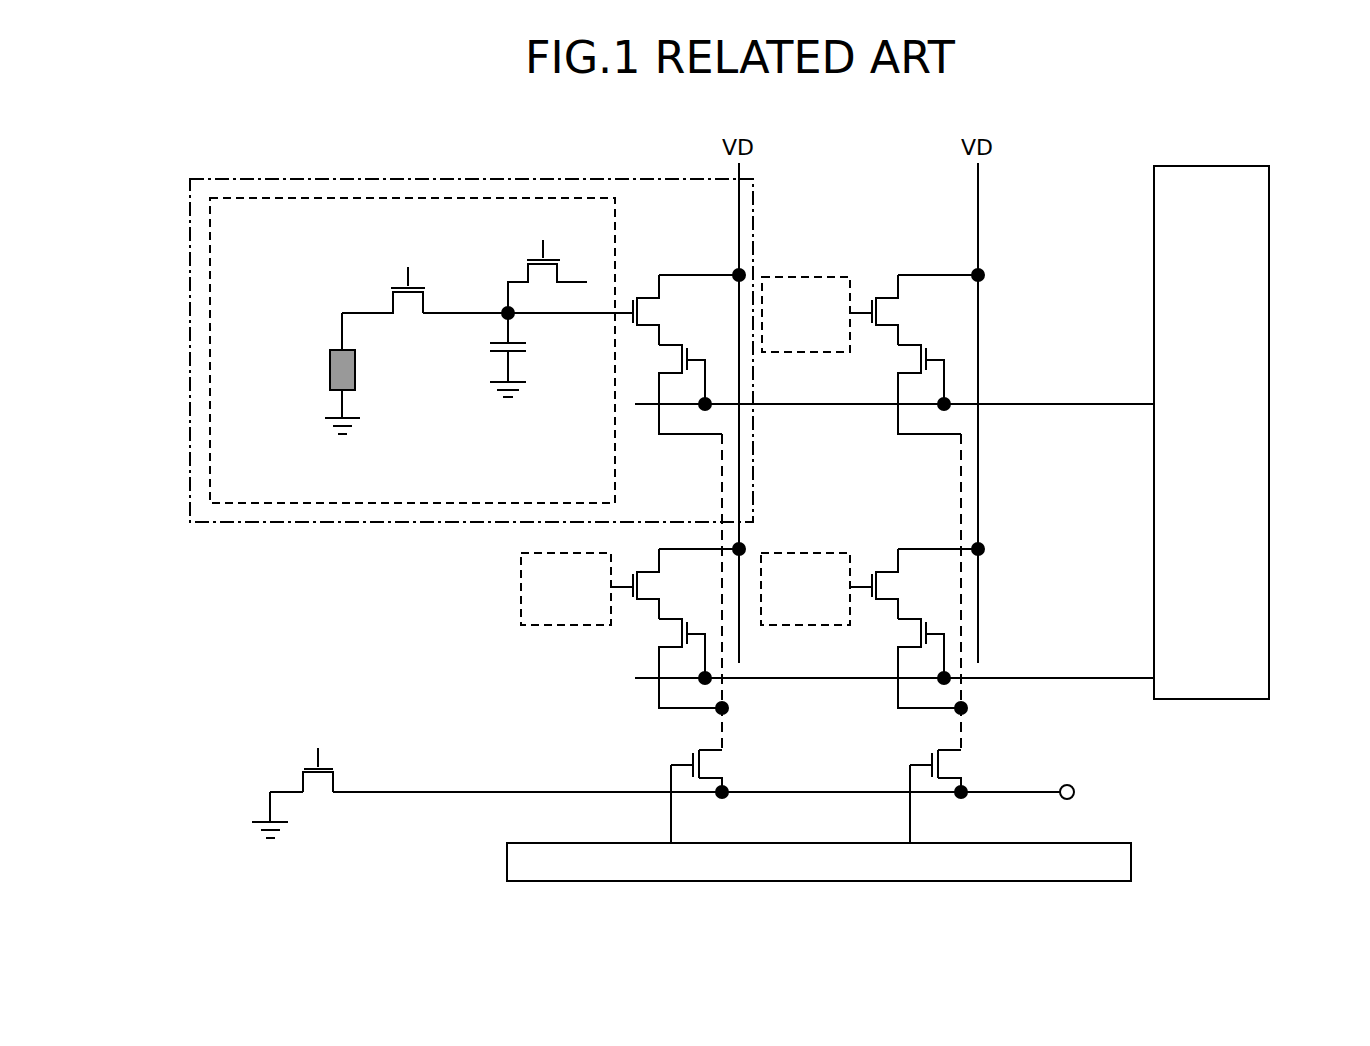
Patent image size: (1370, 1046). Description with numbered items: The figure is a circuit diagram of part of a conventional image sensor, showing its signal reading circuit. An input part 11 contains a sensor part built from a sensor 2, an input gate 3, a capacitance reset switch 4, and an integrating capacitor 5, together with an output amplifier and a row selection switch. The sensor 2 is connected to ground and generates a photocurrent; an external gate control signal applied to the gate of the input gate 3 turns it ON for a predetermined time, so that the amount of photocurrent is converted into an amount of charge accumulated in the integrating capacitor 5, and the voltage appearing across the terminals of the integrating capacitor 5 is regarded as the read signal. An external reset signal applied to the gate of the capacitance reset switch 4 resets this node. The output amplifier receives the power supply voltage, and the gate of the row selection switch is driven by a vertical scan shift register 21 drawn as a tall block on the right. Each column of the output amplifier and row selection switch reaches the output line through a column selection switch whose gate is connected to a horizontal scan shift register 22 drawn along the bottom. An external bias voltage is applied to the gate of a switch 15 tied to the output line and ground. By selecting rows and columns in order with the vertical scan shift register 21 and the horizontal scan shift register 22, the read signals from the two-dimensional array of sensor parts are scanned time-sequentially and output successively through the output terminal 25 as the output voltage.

The sensor 2 is at (357, 375).
The input gate 3 is at (394, 282).
The capacitance reset switch 4 is at (528, 252).
The integrating capacitor 5 is at (528, 350).
The input part 11 is at (187, 278).
The switch 15 is at (338, 757).
The vertical scan shift register 21 is at (1270, 315).
The horizontal scan shift register 22 is at (1133, 858).
The output terminal 25 is at (1073, 786).